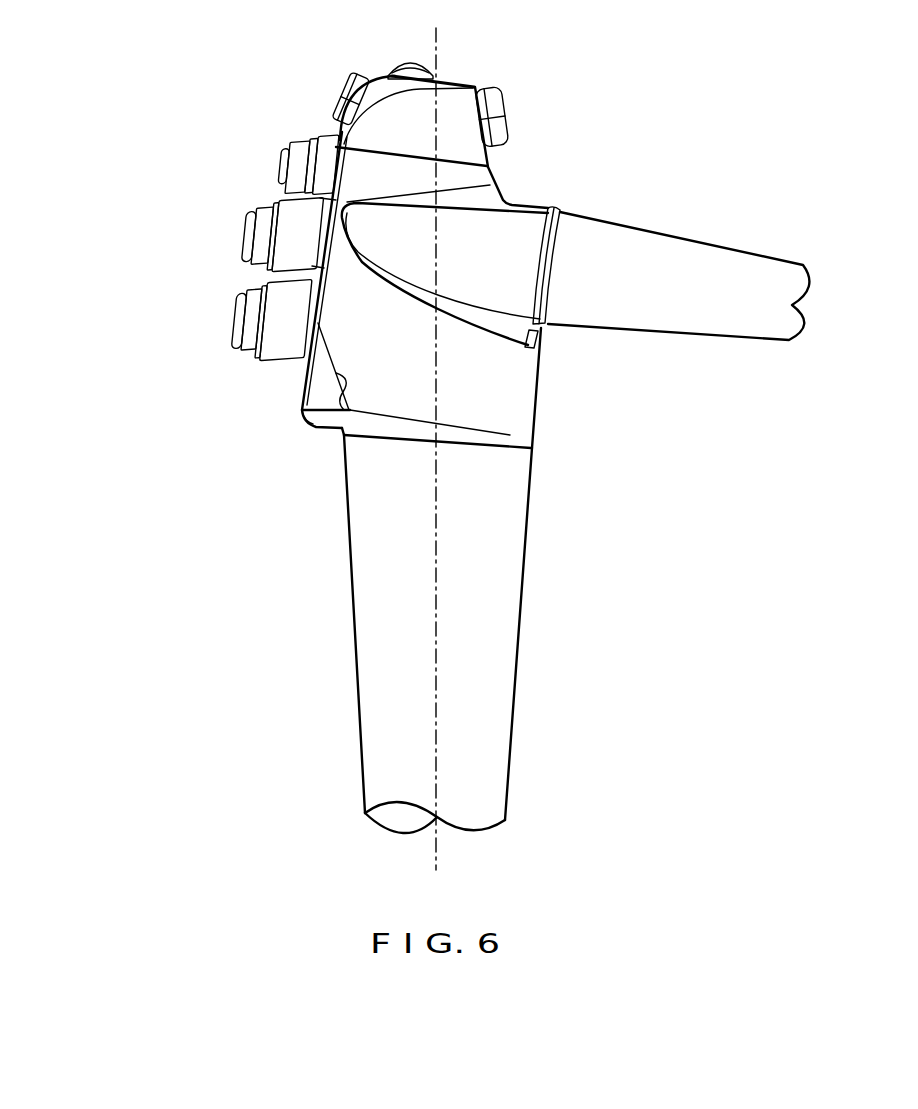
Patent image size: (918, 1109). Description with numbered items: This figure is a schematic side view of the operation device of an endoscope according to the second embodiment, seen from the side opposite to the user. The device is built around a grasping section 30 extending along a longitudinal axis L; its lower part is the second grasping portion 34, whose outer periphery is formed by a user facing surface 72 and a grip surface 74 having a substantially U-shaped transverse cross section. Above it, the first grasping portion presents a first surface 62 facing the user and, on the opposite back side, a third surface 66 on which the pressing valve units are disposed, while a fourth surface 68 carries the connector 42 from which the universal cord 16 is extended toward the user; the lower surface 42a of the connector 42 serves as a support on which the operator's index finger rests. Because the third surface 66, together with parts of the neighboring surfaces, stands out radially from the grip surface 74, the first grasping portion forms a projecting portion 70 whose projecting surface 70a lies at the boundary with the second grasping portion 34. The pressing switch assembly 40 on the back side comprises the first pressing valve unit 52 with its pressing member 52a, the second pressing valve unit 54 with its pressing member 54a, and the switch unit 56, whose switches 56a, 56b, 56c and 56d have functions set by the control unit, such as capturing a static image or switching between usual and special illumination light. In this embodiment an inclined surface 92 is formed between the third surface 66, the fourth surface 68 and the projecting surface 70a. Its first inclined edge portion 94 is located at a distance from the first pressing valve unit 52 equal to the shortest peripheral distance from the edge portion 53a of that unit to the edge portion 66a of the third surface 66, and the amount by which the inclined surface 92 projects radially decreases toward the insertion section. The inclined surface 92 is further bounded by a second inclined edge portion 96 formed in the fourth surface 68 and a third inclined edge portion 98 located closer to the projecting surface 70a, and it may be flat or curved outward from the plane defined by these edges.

The universal cord 16 is at (764, 265).
The grasping section 30 is at (556, 453).
The second grasping portion 34 is at (385, 780).
The pressing switch assembly 40 is at (125, 251).
The connector 42 is at (527, 247).
The lower surface of the connector 42a is at (497, 338).
The first pressing valve unit 52 is at (228, 314).
The pressing member of the first pressing valve unit 52a is at (232, 332).
The edge portion of the first pressing valve unit 53a is at (312, 325).
The second pressing valve unit 54 is at (238, 222).
The pressing member of the second pressing valve unit 54a is at (240, 242).
The switch unit 56 is at (212, 113).
The switch 56a is at (282, 158).
The switch 56b is at (333, 99).
The switch 56c is at (401, 66).
The switch 56d is at (507, 108).
The first surface 62 is at (537, 425).
The third surface 66 is at (318, 197).
The edge portion of the third surface 66a is at (310, 265).
The fourth surface 68 is at (494, 182).
The projecting portion 70 is at (409, 634).
The projecting surface 70a is at (326, 436).
The user facing surface (fifth surface) 72 is at (520, 658).
The grip surface (sixth surface) 74 is at (356, 682).
The inclined surface 92 is at (313, 377).
The first inclined edge portion 94 is at (307, 372).
The second inclined edge portion 96 is at (311, 424).
The third inclined edge portion 98 is at (304, 421).
The longitudinal axis L is at (435, 765).